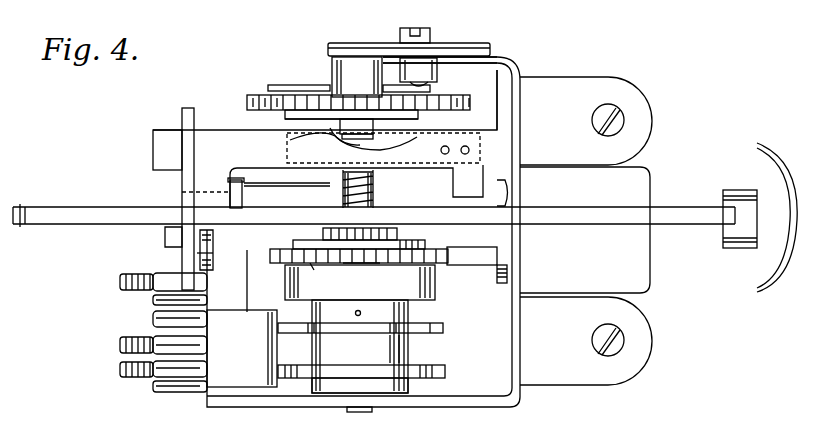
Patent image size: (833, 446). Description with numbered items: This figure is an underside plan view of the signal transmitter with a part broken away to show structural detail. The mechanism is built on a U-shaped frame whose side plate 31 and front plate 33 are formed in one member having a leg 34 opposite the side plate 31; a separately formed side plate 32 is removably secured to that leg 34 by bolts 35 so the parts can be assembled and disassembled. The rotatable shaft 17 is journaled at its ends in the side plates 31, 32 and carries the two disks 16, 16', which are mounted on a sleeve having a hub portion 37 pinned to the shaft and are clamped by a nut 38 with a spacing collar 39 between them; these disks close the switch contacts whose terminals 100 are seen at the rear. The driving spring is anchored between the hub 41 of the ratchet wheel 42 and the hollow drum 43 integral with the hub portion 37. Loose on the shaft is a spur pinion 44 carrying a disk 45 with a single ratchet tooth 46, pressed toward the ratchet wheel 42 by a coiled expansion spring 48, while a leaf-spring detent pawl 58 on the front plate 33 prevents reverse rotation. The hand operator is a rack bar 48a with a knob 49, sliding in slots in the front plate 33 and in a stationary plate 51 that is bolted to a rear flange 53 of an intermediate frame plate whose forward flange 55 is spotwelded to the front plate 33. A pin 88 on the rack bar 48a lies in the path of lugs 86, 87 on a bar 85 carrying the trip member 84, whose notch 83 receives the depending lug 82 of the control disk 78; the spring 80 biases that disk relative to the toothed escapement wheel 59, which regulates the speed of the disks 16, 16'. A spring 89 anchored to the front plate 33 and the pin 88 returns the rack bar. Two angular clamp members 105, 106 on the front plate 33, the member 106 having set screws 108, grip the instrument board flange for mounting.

The disk 16 is at (379, 326).
The disk 16' is at (381, 368).
The rotatable shaft 17 is at (368, 410).
The side plate 31 is at (444, 404).
The side plate 32 is at (455, 48).
The front plate 33 is at (514, 186).
The leg 34 is at (497, 66).
The bolts 35 is at (431, 33).
The hub portion 37 is at (410, 318).
The nut 38 is at (340, 386).
The spacing collar 39 is at (410, 352).
The hub 41 is at (356, 263).
The ratchet wheel 42 is at (270, 256).
The hollow drum 43 is at (428, 284).
The spur pinion 44 is at (385, 236).
The disk 45 is at (413, 246).
The ratchet tooth 46 is at (322, 258).
The coiled expansion spring 48 is at (376, 195).
The rack bar 48a is at (692, 222).
The knob 49 is at (762, 167).
The stationary plate 51 is at (182, 113).
The flange 53 is at (197, 253).
The flange 55 is at (507, 87).
The detent pawl 58 is at (483, 253).
The toothed escapement wheel 59 is at (257, 95).
The control disk 78 is at (418, 118).
The spring 80 is at (348, 110).
The depending lug 82 is at (402, 140).
The notch 83 is at (290, 140).
The trip member 84 is at (336, 117).
The bar 85 is at (153, 150).
The lug 86 is at (468, 195).
The lug 87 is at (212, 192).
The pin 88 is at (242, 196).
The spring 89 is at (290, 186).
The terminals 100 is at (165, 330).
The angular member 105 is at (632, 273).
The angular member 106 is at (638, 118).
The set screw 108 is at (618, 118).